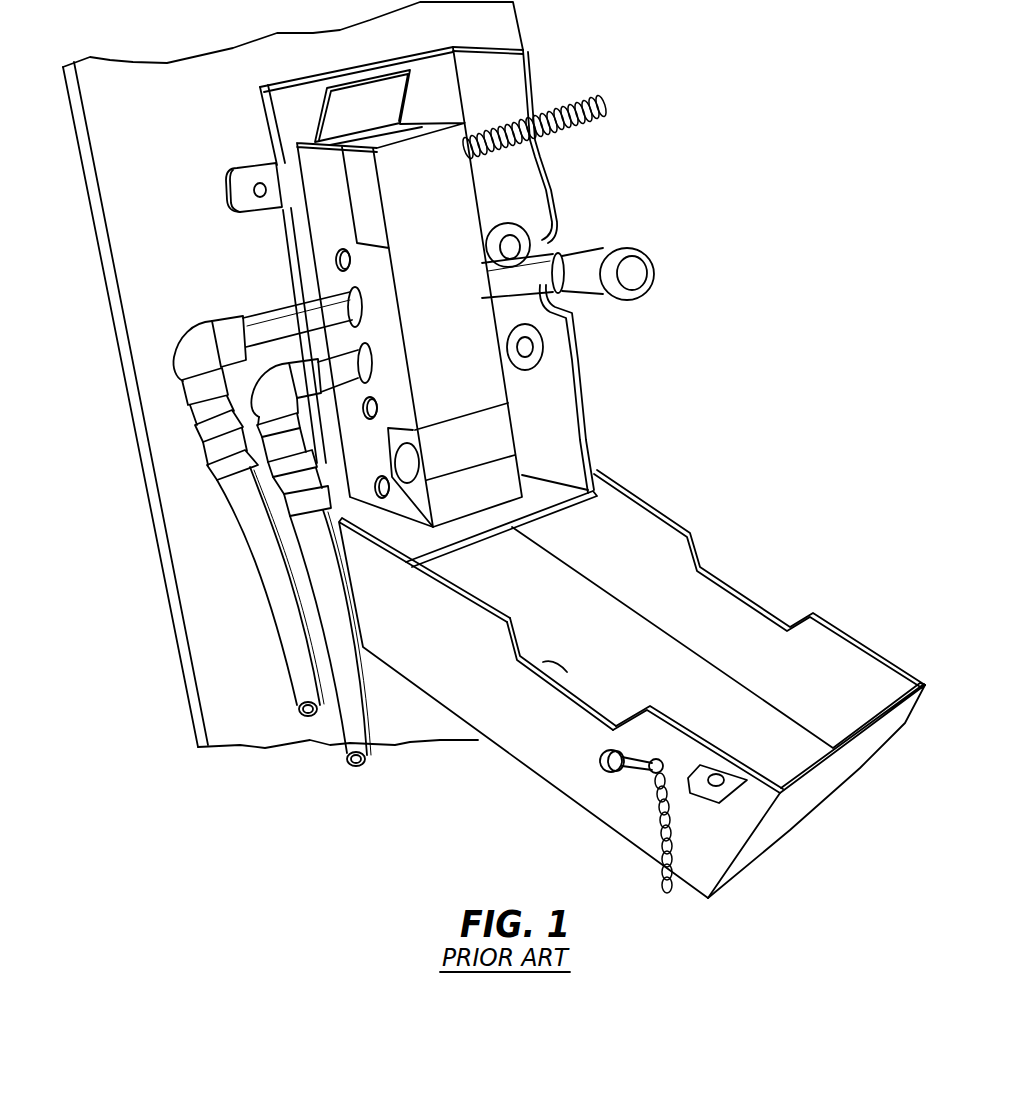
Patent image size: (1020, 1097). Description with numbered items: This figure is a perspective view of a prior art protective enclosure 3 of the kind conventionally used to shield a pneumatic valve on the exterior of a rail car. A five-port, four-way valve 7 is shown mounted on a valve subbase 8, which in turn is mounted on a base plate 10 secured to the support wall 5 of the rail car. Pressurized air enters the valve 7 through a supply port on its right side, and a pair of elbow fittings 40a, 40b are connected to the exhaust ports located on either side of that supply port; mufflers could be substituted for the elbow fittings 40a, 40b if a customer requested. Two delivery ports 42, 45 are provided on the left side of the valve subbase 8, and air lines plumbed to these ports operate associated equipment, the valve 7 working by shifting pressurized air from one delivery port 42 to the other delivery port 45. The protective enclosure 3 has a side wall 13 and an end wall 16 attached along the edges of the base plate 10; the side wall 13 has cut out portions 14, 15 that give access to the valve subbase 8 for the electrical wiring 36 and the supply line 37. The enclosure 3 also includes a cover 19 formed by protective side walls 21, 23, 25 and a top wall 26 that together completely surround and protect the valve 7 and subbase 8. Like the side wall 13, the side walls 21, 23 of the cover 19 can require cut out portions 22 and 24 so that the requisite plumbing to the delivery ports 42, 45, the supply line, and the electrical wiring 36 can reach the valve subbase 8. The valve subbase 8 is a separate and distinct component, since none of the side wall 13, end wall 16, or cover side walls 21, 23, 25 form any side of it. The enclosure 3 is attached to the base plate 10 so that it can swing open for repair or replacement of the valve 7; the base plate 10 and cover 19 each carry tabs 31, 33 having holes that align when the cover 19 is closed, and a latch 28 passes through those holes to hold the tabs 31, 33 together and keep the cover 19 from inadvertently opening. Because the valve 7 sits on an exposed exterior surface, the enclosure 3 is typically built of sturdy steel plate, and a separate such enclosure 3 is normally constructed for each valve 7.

The protective enclosure 3 is at (632, 432).
The support wall 5 is at (120, 200).
The valve 7 is at (450, 206).
The valve subbase 8 is at (342, 256).
The base plate 10 is at (290, 97).
The side wall 13 is at (503, 67).
The cut out portion 14 is at (531, 157).
The cut out portion 15 is at (570, 318).
The end wall 16 is at (537, 492).
The cover 19 is at (753, 866).
The protective side wall 21 is at (830, 650).
The cut out portion 22 is at (753, 598).
The protective side wall 23 is at (572, 782).
The cut out portion 24 is at (580, 700).
The protective side wall 25 is at (850, 762).
The top wall 26 is at (535, 672).
The latch 28 is at (650, 770).
The tab 31 is at (233, 197).
The tab 33 is at (733, 778).
The electrical wiring 36 is at (557, 130).
The supply line 37 is at (650, 265).
The elbow fitting 40a is at (530, 236).
The elbow fitting 40b is at (545, 343).
The delivery port 42 is at (368, 302).
The delivery port 45 is at (372, 360).